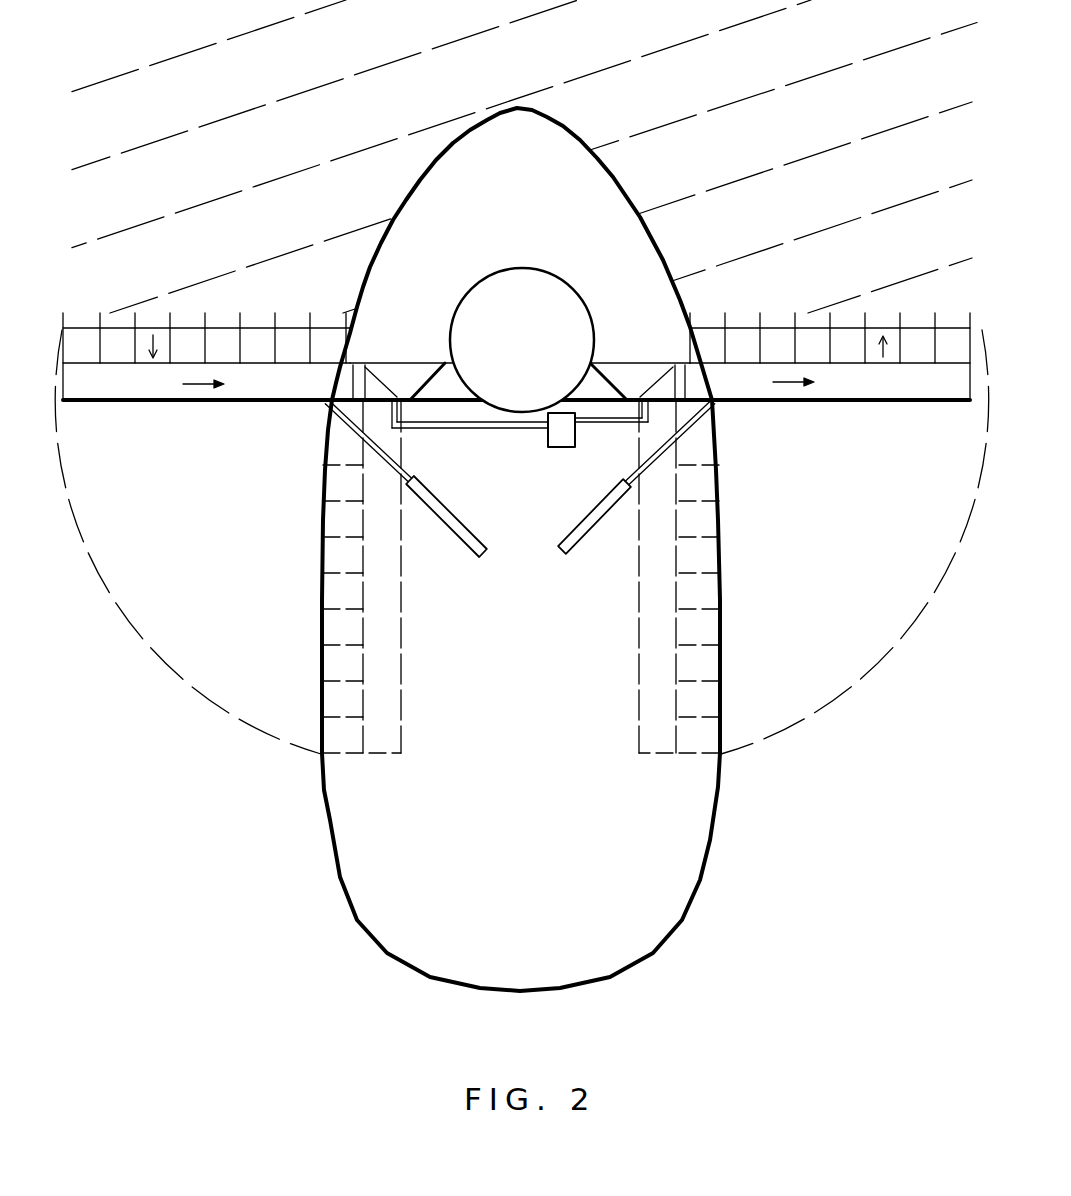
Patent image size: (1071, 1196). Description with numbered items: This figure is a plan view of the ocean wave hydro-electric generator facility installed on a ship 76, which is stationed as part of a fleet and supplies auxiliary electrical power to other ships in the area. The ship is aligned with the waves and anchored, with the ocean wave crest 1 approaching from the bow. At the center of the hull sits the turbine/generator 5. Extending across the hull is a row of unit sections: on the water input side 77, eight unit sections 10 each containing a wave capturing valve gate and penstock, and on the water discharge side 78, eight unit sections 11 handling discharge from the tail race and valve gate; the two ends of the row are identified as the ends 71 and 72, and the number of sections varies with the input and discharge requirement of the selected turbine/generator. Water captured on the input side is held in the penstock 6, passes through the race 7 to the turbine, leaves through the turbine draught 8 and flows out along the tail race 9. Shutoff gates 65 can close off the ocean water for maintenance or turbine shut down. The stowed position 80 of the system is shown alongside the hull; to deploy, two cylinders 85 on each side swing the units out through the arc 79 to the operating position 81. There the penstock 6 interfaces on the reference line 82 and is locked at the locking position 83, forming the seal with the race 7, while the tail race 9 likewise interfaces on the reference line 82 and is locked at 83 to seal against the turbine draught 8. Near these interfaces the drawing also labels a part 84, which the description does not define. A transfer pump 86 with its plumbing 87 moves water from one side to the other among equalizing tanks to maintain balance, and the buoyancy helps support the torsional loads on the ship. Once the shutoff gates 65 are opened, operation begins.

The ocean wave crest 1 is at (278, 102).
The turbine/generator 5 is at (561, 280).
The penstock 6 is at (128, 391).
The race 7 is at (430, 383).
The turbine draught 8 is at (579, 383).
The tail race 9 is at (848, 393).
The unit section of the water input, wave capturing valve gate and penstock 10 is at (243, 360).
The unit section of the water discharge from the tail race and valve gate 11 is at (855, 360).
The shutoff gate 65 is at (353, 380).
The end of the unit sections 71 is at (64, 364).
The end of the unit sections 72 is at (965, 366).
The ship 76 is at (712, 845).
The water input side 77 is at (276, 304).
The water discharge side 78 is at (878, 308).
The arc 79 is at (522, 542).
The stowed position of the system 80 is at (390, 706).
The operating position 81 is at (213, 307).
The reference line 82 is at (423, 386).
The locking position 83 is at (433, 366).
The mounting brackets 84 is at (405, 408).
The cylinders 85 is at (452, 507).
The transfer pump 86 is at (553, 447).
The plumbing 87 is at (443, 430).